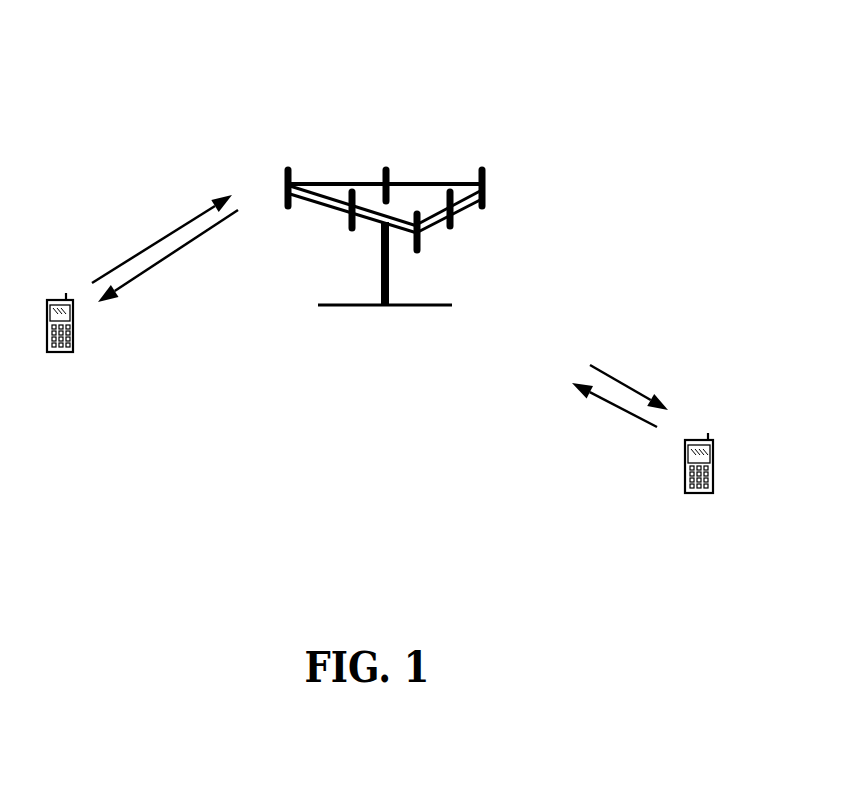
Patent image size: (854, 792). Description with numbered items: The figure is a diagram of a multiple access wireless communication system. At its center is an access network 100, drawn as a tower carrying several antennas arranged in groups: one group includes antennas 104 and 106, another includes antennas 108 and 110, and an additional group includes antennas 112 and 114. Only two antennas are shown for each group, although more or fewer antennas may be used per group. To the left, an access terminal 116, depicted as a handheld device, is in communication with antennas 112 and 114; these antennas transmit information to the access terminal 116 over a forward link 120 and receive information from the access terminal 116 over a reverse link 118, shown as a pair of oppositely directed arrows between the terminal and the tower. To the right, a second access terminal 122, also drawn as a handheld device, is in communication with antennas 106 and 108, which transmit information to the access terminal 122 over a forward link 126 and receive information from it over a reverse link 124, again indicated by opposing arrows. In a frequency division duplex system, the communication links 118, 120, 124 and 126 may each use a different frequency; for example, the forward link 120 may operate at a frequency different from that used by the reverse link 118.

The access network 100 is at (360, 305).
The antenna 104 is at (418, 249).
The antenna 106 is at (450, 228).
The antenna 108 is at (487, 203).
The antenna 110 is at (387, 167).
The antenna 112 is at (293, 177).
The antenna 114 is at (352, 228).
The access terminal 116 is at (60, 300).
The reverse link 118 is at (160, 240).
The forward link 120 is at (177, 252).
The access terminal 122 is at (700, 434).
The reverse link 124 is at (602, 398).
The forward link 126 is at (632, 389).